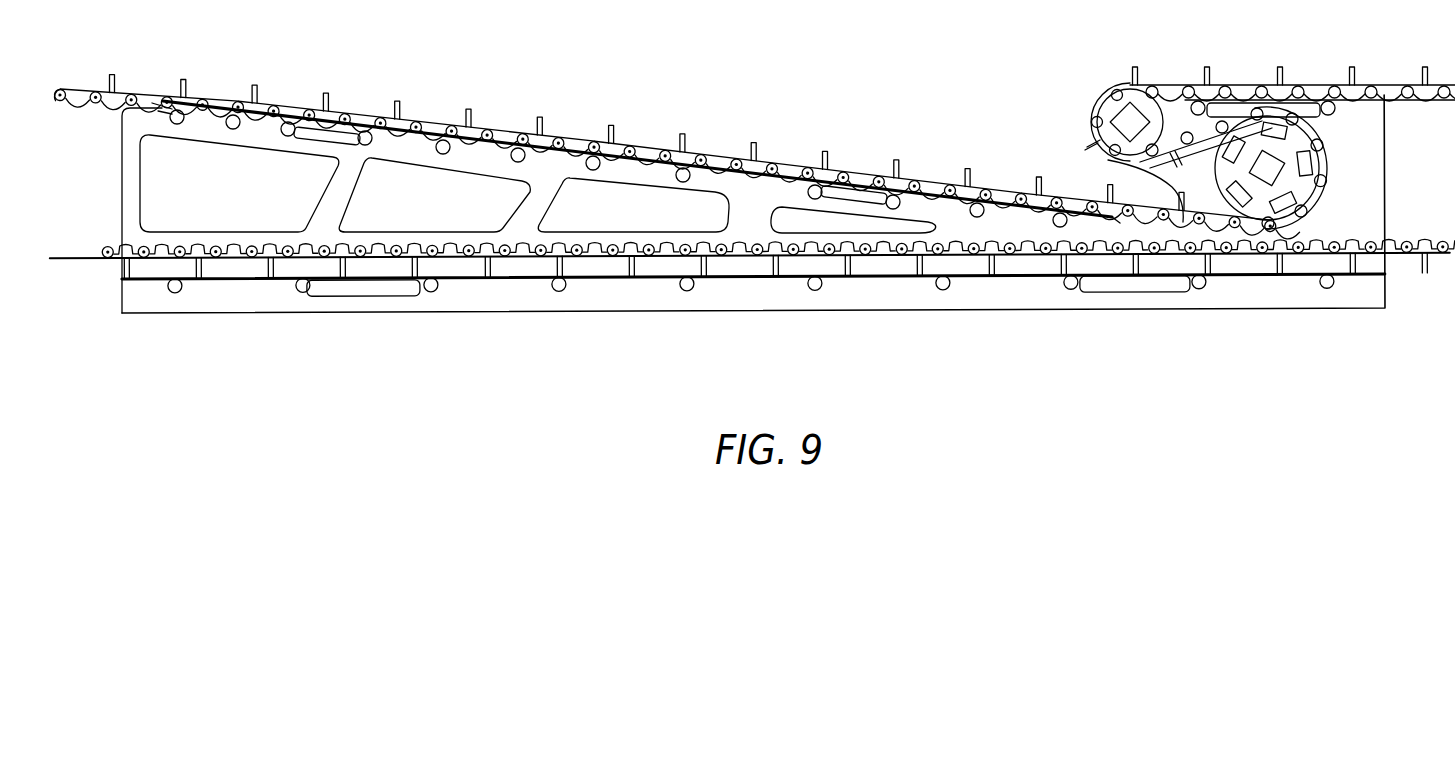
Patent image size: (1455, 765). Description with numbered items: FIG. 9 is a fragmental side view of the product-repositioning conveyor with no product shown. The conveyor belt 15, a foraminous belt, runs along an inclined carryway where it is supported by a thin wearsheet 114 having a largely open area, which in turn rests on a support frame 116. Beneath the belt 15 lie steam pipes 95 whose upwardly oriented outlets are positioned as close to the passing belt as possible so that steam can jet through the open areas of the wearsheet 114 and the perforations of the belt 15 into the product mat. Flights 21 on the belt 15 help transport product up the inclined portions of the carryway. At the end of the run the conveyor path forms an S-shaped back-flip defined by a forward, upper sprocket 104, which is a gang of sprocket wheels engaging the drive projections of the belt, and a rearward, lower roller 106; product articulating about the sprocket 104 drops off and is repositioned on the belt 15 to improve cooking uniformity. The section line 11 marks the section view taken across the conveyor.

The support frame 116 is at (138, 125).
The wearsheet 114 is at (476, 132).
The conveyor belt 15 is at (933, 175).
The flights 21 is at (1040, 187).
The steam pipe 95 is at (826, 178).
The upper sprocket 104 is at (1117, 105).
The lower roller 106 is at (1322, 155).
The section line 11- 11 is at (800, 124).